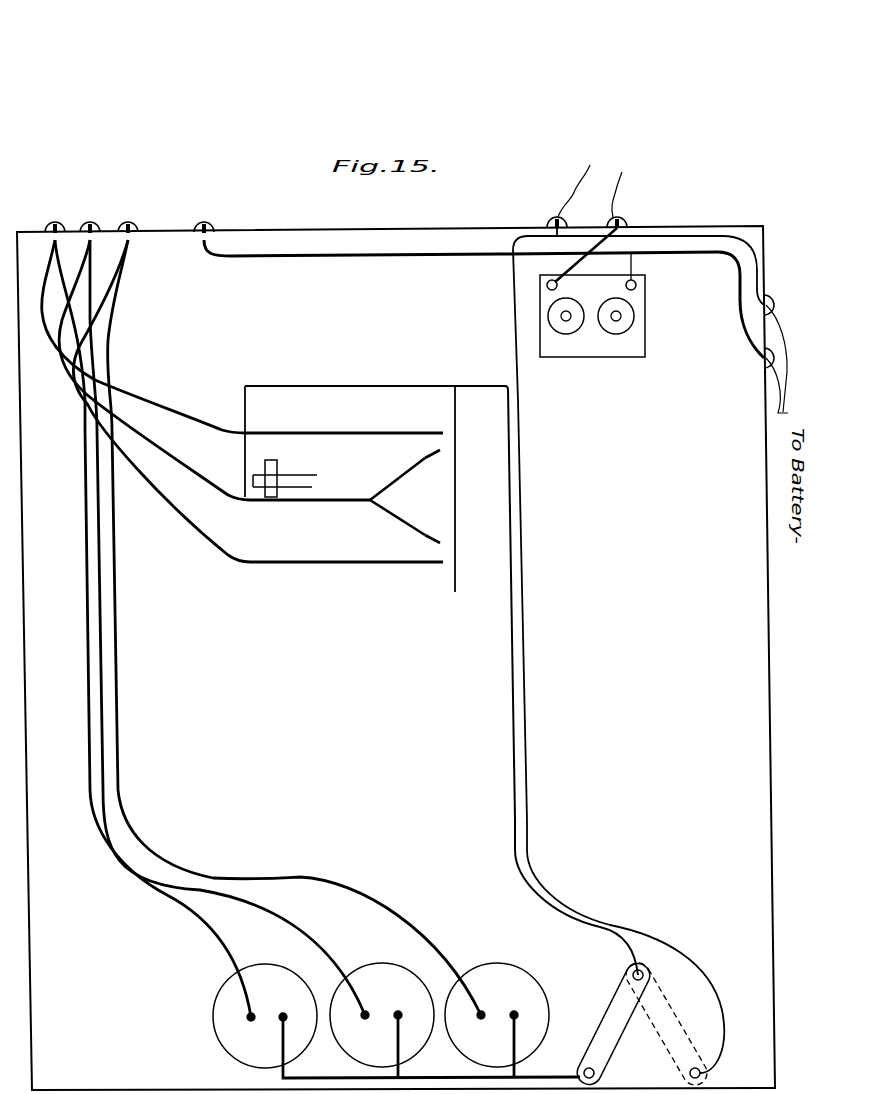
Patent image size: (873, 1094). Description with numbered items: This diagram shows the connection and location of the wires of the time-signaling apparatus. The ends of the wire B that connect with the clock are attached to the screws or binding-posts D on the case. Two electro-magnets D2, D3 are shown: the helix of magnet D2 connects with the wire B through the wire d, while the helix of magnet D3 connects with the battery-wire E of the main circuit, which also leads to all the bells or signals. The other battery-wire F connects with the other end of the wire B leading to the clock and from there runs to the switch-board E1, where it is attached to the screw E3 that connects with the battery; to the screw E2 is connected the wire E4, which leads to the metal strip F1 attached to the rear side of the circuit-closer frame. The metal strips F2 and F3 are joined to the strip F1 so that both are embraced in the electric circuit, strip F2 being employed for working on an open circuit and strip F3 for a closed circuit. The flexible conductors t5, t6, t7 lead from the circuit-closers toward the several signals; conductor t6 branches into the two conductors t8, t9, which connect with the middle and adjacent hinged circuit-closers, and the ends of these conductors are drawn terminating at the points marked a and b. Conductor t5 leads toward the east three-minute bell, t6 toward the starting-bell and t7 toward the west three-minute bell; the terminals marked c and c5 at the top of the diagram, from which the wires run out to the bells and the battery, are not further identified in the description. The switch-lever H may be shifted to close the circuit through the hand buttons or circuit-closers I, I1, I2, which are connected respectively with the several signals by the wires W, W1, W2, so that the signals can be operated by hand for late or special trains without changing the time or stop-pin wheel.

The bell circuit terminals c is at (135, 214).
The battery wire terminal c5 is at (218, 205).
The wire W is at (153, 628).
The wire W1 is at (227, 627).
The wire W2 is at (294, 627).
The flexible conductor t5 is at (233, 336).
The flexible conductor t6 is at (214, 370).
The flexible conductor t7 is at (249, 401).
The conductor t8 is at (397, 479).
The conductor t9 is at (397, 517).
The contact points a is at (435, 497).
The contact points b is at (436, 499).
The metal strip F1 is at (775, 267).
The metal strip F2 is at (467, 489).
The metal strip F3 is at (254, 441).
The wire d is at (435, 362).
The battery-wire E is at (496, 325).
The wire E4 is at (559, 680).
The battery-wire F is at (638, 650).
The binding-post D is at (592, 277).
The wire B is at (599, 168).
The electro-magnet D2 is at (566, 325).
The electro-magnet D3 is at (616, 325).
The hand button or circuit-closer I is at (265, 1016).
The hand button or circuit-closer I1 is at (382, 1020).
The hand button or circuit-closer I2 is at (497, 1020).
The switch-lever H is at (639, 1024).
The screw E3 is at (630, 973).
The switch-board E1 is at (611, 1075).
The screw E2 is at (704, 1058).